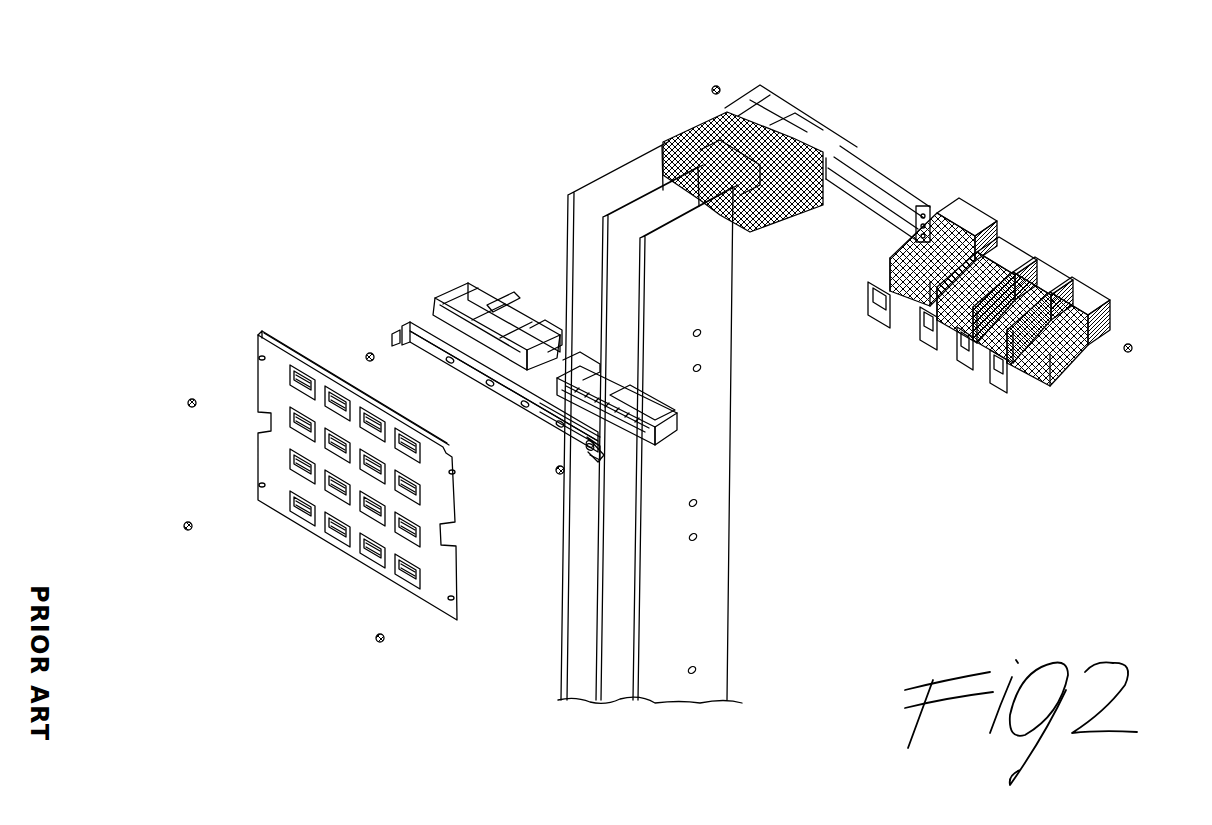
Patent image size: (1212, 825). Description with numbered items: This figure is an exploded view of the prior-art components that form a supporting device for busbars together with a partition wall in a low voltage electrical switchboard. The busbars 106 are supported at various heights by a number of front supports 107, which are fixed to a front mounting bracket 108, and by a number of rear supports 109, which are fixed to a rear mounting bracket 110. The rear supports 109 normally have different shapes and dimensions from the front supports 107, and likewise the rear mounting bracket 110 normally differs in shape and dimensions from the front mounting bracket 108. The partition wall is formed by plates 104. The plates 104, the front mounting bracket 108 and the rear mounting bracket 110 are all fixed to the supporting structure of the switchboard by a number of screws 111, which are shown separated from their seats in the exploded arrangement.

The plate 104 is at (283, 340).
The busbar 106 is at (580, 188).
The front support 107 is at (461, 290).
The front mounting bracket 108 is at (430, 320).
The rear support 109 is at (783, 100).
The rear mounting bracket 110 is at (915, 186).
The screw 111 is at (712, 84).